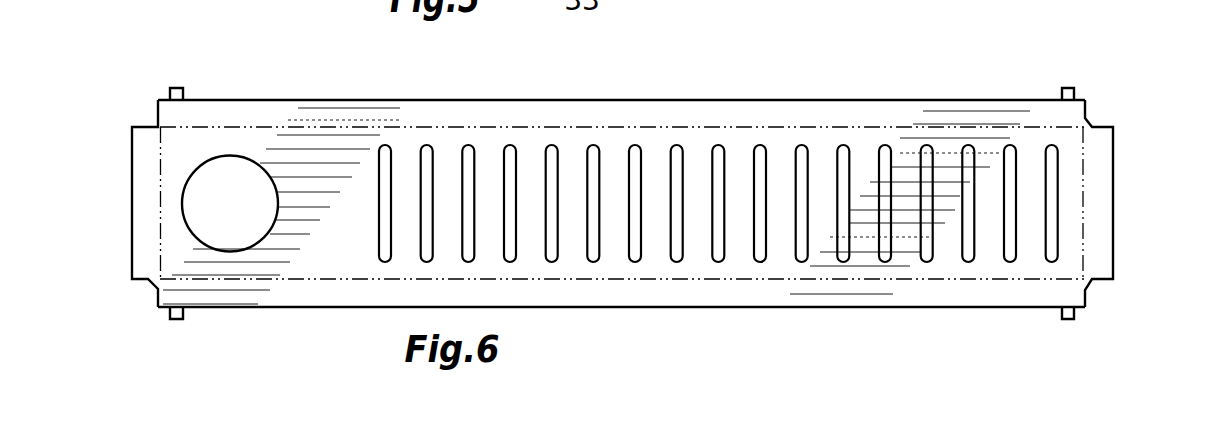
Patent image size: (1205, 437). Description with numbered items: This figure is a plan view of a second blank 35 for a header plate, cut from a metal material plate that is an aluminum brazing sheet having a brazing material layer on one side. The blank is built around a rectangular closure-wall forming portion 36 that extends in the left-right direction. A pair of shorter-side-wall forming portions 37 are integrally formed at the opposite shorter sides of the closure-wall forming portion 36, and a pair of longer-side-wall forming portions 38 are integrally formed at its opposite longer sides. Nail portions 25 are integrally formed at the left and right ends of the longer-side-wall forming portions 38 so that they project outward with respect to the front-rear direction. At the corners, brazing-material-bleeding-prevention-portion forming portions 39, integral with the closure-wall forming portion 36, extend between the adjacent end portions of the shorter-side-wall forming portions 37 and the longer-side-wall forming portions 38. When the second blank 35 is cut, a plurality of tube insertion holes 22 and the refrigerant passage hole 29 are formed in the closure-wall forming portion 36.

The tube insertion holes 22 is at (593, 145).
The nail portions 25 is at (176, 88).
The refrigerant passage hole 29 is at (230, 167).
The second blank 35 is at (859, 78).
The closure-wall forming portion 36 is at (348, 143).
The shorter-side-wall forming portions 37 is at (143, 203).
The longer-side-wall forming portions 38 is at (637, 115).
The brazing-material-bleeding-prevention-portion forming portions 39 is at (157, 125).